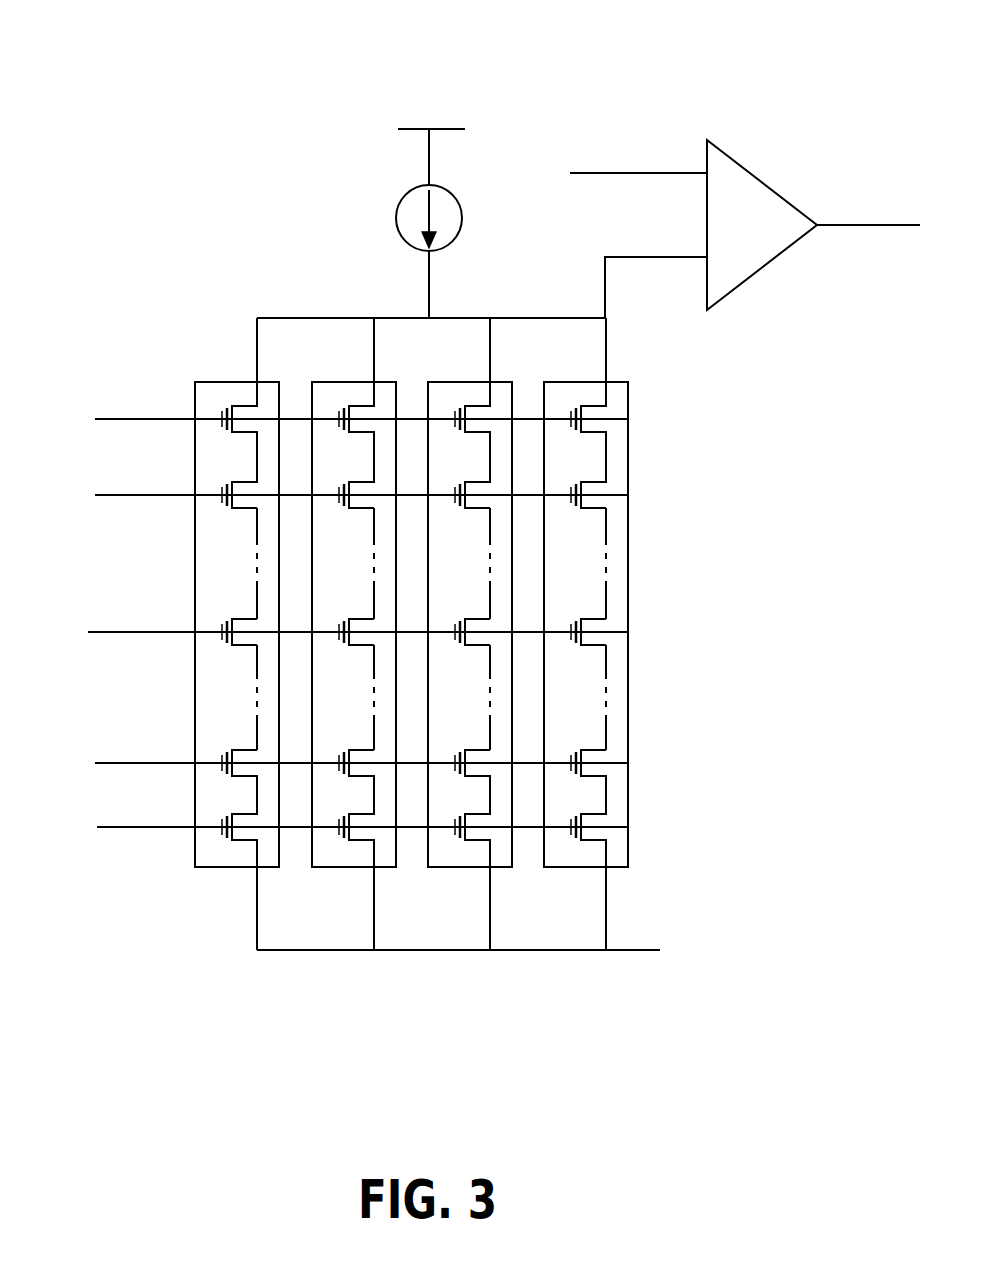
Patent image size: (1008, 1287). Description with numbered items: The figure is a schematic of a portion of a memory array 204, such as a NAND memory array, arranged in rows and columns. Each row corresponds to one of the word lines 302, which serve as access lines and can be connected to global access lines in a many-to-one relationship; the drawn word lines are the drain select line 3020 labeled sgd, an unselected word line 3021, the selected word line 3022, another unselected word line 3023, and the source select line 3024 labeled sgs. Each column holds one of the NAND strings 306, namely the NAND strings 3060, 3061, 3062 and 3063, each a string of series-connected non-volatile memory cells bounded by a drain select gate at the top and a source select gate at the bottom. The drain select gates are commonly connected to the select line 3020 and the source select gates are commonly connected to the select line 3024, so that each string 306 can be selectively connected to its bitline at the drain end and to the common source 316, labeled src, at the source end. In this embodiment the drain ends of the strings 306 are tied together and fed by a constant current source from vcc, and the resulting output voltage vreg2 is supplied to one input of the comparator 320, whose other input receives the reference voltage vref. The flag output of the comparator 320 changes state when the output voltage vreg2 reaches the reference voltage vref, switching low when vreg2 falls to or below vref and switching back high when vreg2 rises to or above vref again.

The memory array 204 is at (135, 100).
The word lines 302 is at (316, 602).
The drain select line (SGD) 3020 is at (152, 417).
The word line 3021 is at (173, 493).
The word line 3022 is at (150, 630).
The word line 3023 is at (160, 762).
The source select line (SGS) 3024 is at (155, 826).
The NAND strings 306 is at (447, 634).
The NAND string 3060 is at (262, 347).
The NAND string 3061 is at (389, 634).
The NAND string 3062 is at (505, 634).
The NAND string 3063 is at (621, 634).
The common source (SRC) 316 is at (500, 953).
The comparator 320 is at (750, 168).